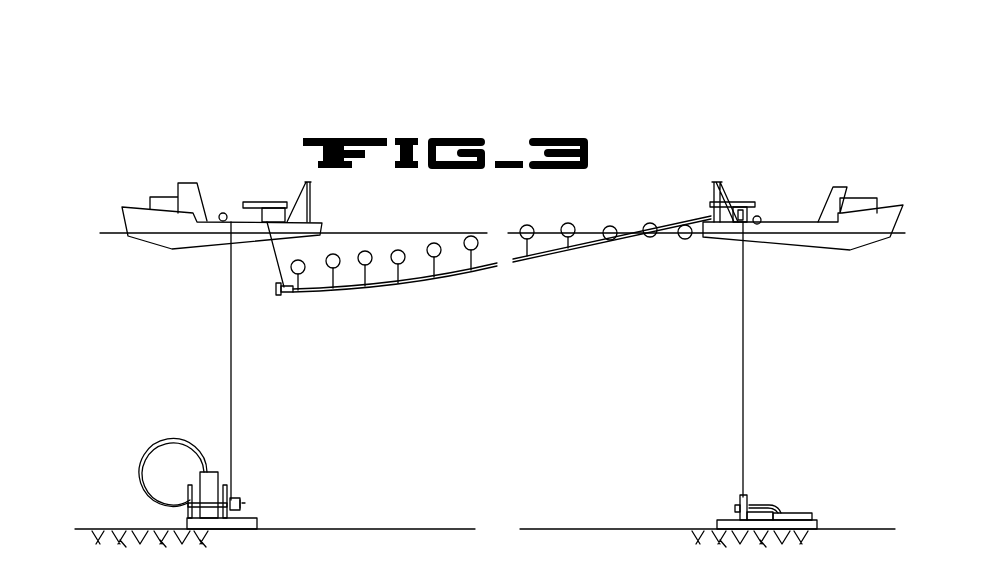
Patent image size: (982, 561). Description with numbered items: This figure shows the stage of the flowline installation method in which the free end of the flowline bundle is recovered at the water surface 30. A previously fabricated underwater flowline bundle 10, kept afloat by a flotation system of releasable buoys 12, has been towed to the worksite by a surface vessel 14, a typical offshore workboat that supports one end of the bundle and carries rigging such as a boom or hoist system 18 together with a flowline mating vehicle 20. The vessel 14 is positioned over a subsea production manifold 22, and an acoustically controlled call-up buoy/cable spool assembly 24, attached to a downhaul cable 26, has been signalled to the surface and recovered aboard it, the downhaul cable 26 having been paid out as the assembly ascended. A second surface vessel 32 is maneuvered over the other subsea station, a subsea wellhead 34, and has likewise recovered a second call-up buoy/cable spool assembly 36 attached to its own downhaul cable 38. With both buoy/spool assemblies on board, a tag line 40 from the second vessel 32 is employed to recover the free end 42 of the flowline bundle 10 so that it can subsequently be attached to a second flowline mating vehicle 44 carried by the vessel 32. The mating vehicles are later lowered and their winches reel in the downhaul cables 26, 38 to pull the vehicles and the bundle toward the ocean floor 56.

The flowline bundle 10 is at (482, 271).
The releasable buoys 12 is at (398, 249).
The surface vessel 14 is at (866, 197).
The boom or hoist system 18 is at (711, 191).
The flowline mating vehicle 20 is at (740, 202).
The subsea production manifold 22 is at (778, 512).
The call-up buoy/cable spool assembly 24 is at (762, 218).
The downhaul cable 26 is at (742, 387).
The water surface 30 is at (423, 233).
The second surface vessel 32 is at (185, 183).
The subsea wellhead 34 is at (213, 468).
The second call-up buoy/cable spool assembly 36 is at (223, 212).
The downhaul cable 38 is at (230, 347).
The tag line 40 is at (275, 252).
The free end 42 is at (280, 296).
The second flowline mating vehicle 44 is at (273, 202).
The ocean floor 56 is at (555, 529).